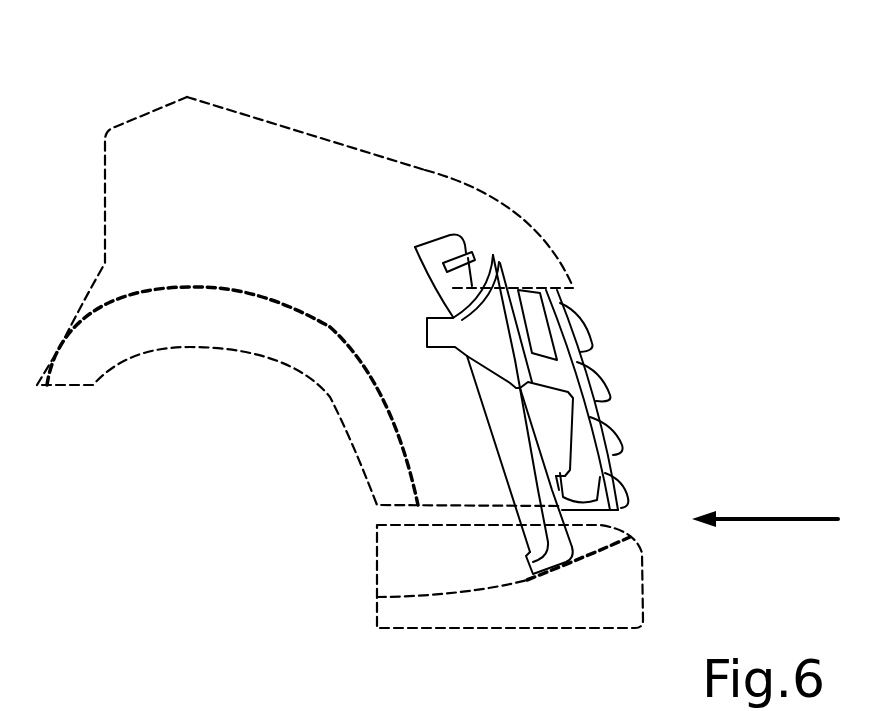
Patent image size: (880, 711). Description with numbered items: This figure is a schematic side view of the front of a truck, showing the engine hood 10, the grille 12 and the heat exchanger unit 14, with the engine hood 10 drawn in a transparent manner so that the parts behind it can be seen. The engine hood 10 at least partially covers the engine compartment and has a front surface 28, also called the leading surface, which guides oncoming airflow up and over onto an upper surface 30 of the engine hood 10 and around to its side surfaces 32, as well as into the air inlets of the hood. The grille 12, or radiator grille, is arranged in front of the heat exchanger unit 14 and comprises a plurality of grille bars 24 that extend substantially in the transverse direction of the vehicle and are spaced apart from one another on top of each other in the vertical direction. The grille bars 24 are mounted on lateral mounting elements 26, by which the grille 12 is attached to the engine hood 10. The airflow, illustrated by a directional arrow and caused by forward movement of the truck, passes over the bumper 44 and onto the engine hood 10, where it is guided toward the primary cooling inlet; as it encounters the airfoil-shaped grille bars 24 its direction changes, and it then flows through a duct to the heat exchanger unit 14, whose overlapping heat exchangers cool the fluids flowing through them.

The engine hood 10 is at (297, 100).
The grille 12 is at (595, 300).
The heat exchanger unit 14 is at (475, 216).
The grille bars 24 is at (592, 340).
The mounting elements 26 is at (587, 418).
The front surface 28 is at (575, 238).
The upper surface 30 is at (384, 150).
The side surfaces 32 is at (258, 345).
The bumper 44 is at (652, 583).